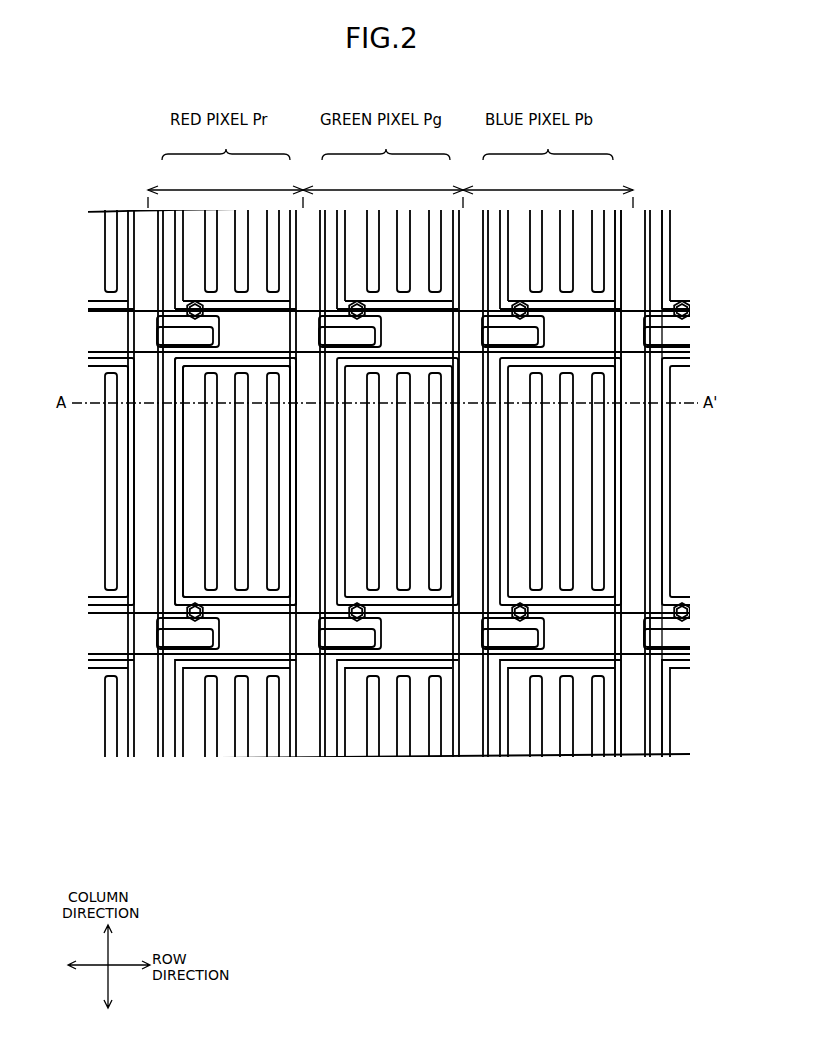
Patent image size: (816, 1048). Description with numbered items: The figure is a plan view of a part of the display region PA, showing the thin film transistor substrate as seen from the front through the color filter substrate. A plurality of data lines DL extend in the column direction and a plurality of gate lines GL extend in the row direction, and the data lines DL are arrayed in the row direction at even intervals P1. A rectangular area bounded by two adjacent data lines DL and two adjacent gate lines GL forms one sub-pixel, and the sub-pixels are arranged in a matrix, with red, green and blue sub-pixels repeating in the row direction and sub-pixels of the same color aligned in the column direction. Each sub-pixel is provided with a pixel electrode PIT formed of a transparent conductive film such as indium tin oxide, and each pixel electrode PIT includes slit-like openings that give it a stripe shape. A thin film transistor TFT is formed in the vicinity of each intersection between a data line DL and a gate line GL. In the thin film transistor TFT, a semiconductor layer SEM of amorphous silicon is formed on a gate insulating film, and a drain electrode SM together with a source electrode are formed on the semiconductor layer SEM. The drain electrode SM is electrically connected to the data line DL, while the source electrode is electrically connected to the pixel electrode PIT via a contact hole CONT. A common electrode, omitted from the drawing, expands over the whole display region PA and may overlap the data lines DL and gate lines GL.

The gate line GL is at (103, 333).
The data line DL is at (642, 762).
The pixel electrode PIT is at (170, 488).
The semiconductor layer SEM is at (215, 322).
The drain electrode SM is at (212, 628).
The contact hole CONT is at (188, 605).
The thin film transistor TFT is at (562, 632).
The display region PA is at (666, 209).
The interval P1 is at (390, 187).